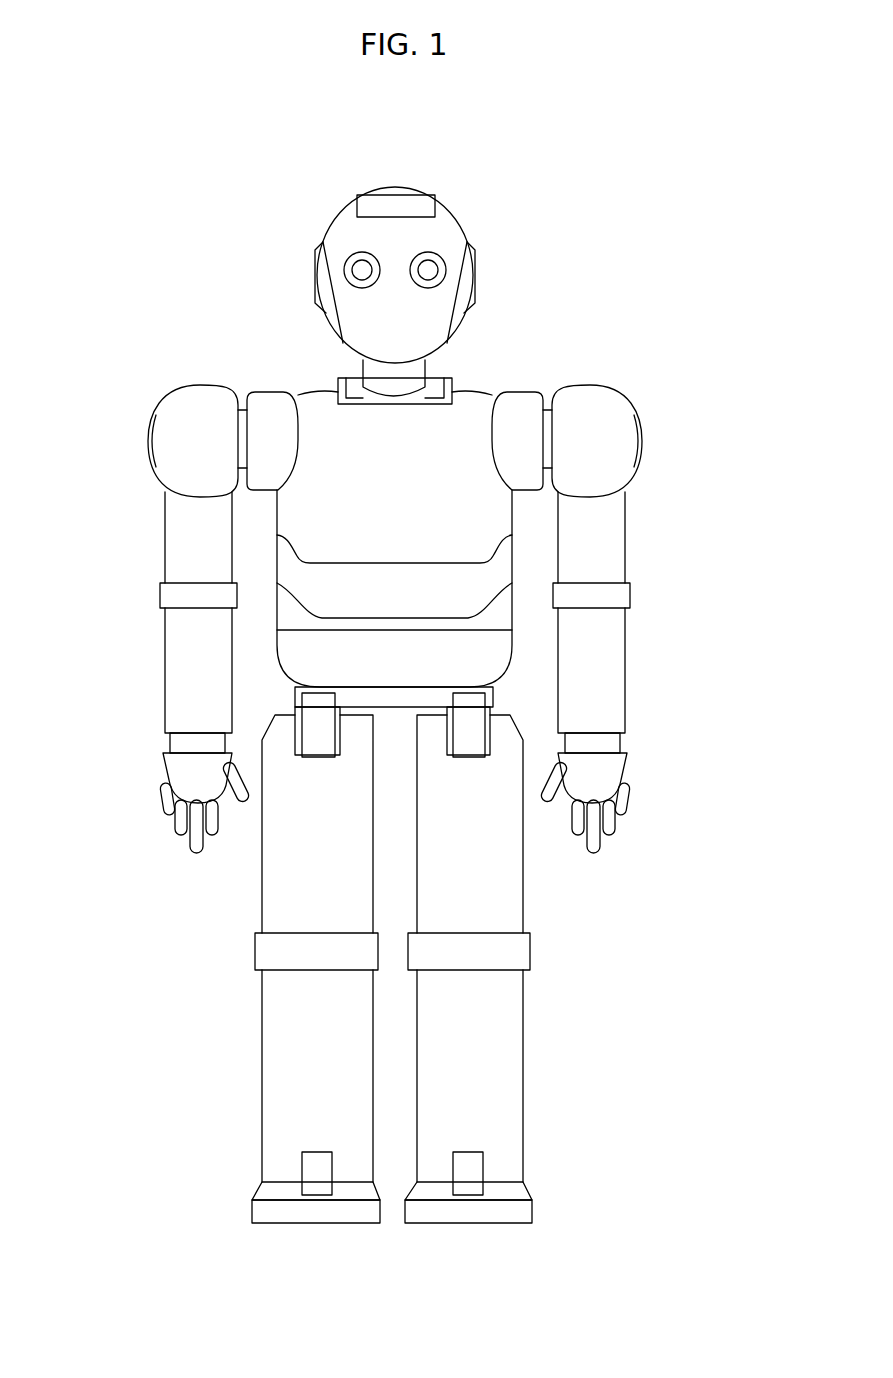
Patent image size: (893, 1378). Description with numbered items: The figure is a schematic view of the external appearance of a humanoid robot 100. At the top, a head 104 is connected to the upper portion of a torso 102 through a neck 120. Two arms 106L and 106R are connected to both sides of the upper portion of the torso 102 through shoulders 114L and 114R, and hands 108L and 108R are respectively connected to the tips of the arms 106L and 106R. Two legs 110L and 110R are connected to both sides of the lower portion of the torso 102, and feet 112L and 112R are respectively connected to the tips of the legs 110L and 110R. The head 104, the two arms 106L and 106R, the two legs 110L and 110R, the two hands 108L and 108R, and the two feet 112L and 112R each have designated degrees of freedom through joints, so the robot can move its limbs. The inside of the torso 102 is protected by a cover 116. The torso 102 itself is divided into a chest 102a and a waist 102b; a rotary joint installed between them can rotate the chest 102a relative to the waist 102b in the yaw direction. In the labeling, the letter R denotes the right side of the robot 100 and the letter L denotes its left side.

The robot 100 is at (622, 195).
The torso 102 is at (717, 562).
The chest 102a is at (529, 563).
The waist 102b is at (528, 648).
The head 104 is at (462, 190).
The right arm 106R is at (124, 586).
The left arm 106L is at (664, 672).
The right hand 108R is at (178, 773).
The left hand 108L is at (607, 775).
The right leg 110R is at (196, 928).
The left leg 110L is at (589, 930).
The right foot 112R is at (258, 1205).
The left foot 112L is at (527, 1205).
The right shoulder 114R is at (208, 352).
The left shoulder 114L is at (578, 352).
The cover 116 is at (513, 512).
The neck 120 is at (449, 364).